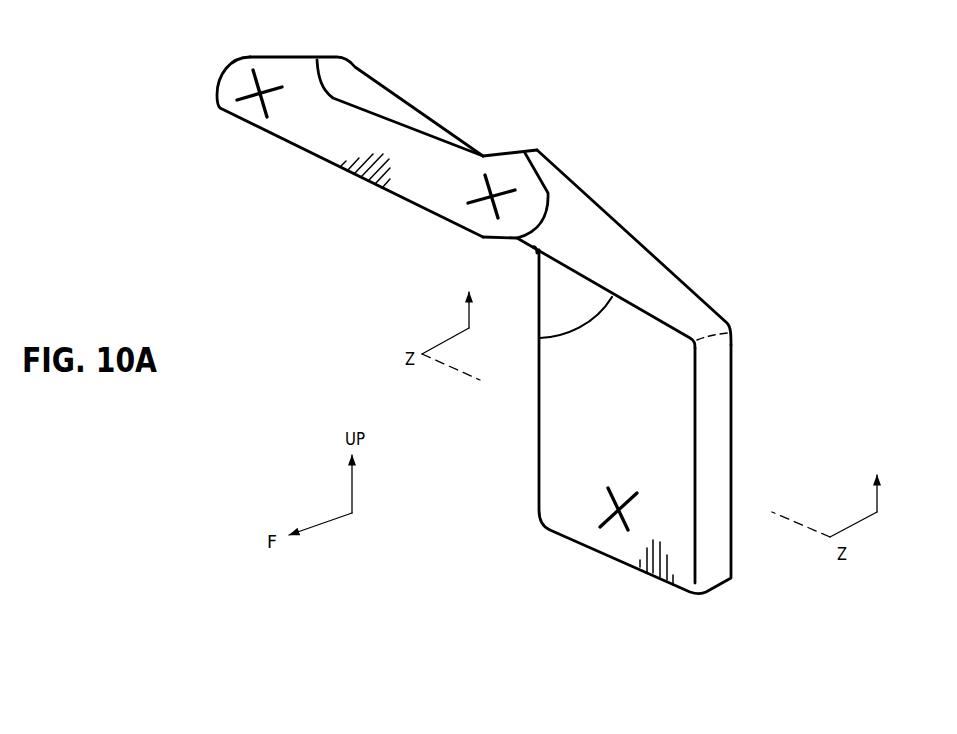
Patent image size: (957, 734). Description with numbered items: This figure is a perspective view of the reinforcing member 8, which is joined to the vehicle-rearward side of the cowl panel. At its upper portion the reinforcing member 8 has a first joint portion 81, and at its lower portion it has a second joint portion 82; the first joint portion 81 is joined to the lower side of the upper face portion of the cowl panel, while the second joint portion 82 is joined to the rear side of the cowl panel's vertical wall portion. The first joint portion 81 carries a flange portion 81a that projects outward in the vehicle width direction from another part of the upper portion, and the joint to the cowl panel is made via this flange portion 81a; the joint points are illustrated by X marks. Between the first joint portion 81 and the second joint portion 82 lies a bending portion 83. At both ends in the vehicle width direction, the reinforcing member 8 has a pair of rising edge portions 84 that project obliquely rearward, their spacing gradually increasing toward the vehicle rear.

The reinforcing member 8 is at (673, 199).
The first joint portion 81 is at (321, 126).
The flange portion 81a is at (278, 65).
The second joint portion 82 is at (553, 457).
The bending portion 83 is at (540, 340).
The rising edge portions 84 is at (652, 265).